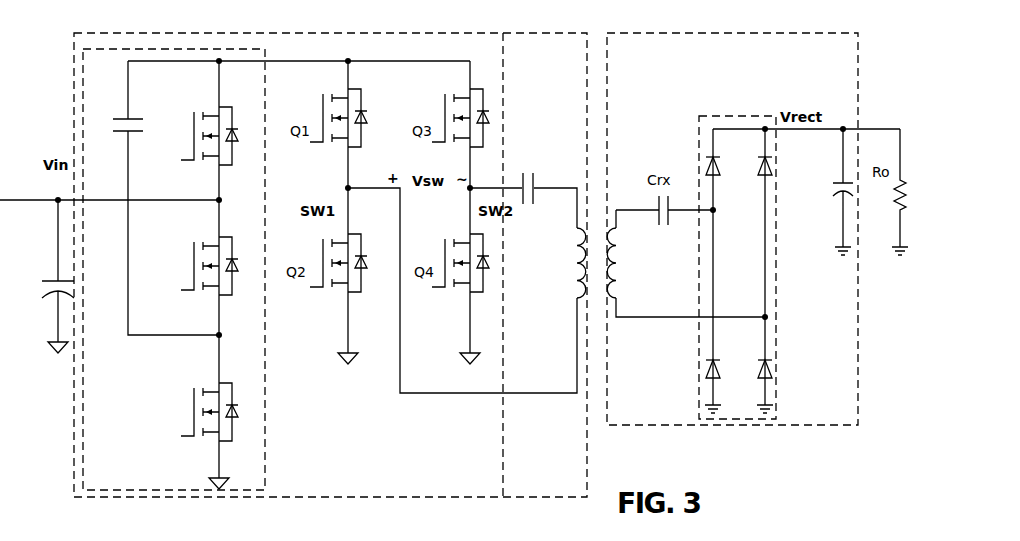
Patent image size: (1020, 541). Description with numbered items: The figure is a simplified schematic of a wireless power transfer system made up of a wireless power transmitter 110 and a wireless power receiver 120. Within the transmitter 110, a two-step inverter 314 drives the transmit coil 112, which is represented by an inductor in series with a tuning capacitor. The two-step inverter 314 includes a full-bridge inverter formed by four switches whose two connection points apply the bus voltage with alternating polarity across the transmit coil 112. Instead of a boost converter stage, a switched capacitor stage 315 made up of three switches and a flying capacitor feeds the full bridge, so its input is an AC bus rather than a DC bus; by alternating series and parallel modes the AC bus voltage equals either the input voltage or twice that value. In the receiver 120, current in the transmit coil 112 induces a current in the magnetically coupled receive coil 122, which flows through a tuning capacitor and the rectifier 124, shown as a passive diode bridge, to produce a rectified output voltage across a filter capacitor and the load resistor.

The wireless power transmitter 110 is at (527, 33).
The wireless power receiver 120 is at (672, 33).
The two-step inverter 314 is at (503, 95).
The switched capacitor stage 315 is at (265, 420).
The wireless power transmit coil 112 is at (575, 289).
The receive coil 122 is at (618, 283).
The rectifier 124 is at (717, 113).